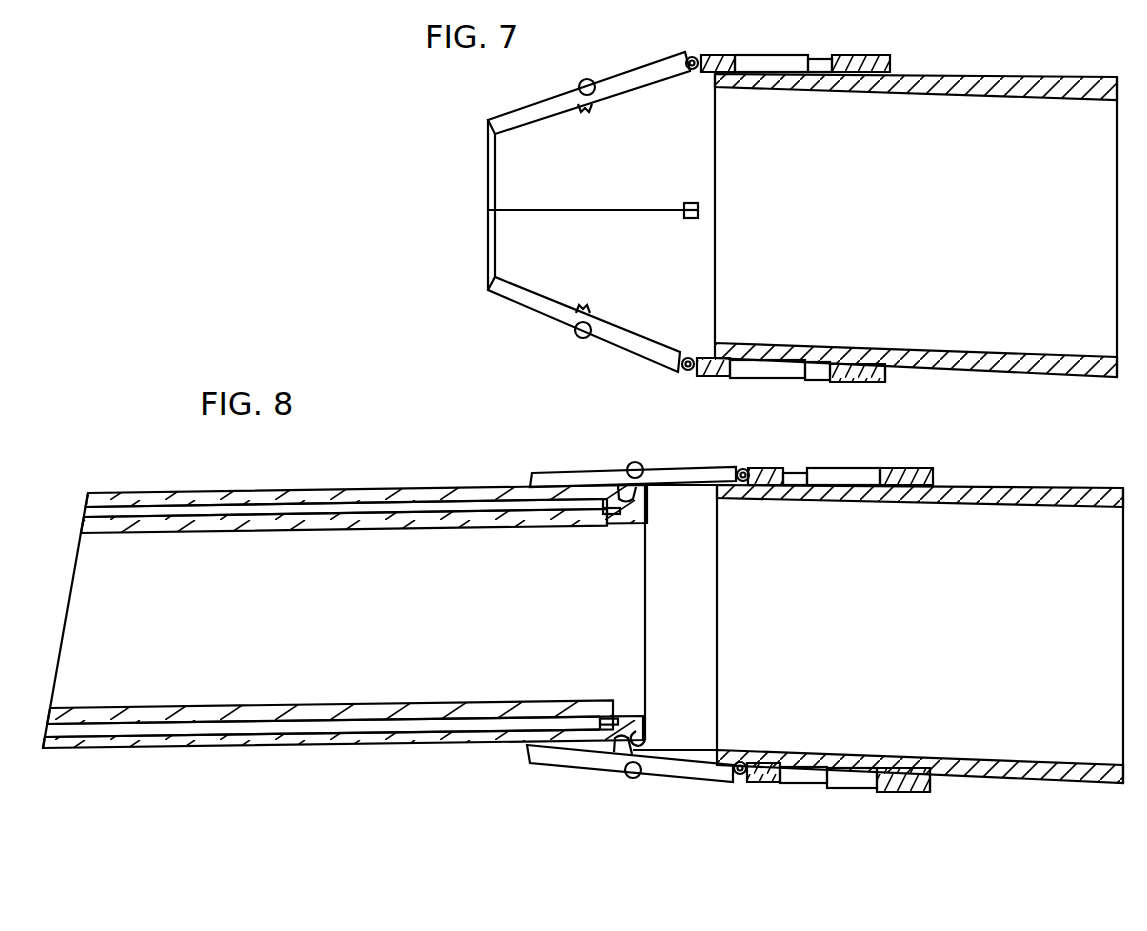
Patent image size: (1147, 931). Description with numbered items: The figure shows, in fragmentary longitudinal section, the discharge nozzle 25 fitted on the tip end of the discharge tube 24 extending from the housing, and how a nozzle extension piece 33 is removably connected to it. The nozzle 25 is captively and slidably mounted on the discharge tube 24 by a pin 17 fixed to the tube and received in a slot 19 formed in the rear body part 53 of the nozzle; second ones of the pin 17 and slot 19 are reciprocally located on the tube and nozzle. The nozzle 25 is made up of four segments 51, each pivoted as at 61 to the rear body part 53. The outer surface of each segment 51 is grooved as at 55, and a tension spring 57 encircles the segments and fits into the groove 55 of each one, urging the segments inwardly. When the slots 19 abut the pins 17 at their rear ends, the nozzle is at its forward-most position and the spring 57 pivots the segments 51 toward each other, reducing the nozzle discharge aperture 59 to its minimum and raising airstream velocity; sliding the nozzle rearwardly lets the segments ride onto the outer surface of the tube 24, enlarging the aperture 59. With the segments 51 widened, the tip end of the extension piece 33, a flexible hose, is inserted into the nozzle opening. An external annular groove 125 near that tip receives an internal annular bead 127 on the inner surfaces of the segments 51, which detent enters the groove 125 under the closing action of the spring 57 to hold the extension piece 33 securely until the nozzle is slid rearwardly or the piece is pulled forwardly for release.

In FIG. 7, the pin 17 is at (832, 58).
In FIG. 8, the pin 17 is at (815, 778).
In FIG. 7, the slot 19 is at (783, 57).
In FIG. 8, the slot 19 is at (850, 782).
In FIG. 7, the discharge tube 24 is at (1045, 175).
In FIG. 8, the discharge tube 24 is at (920, 634).
In FIG. 7, the discharge nozzle 25 is at (617, 349).
In FIG. 8, the discharge nozzle 25 is at (707, 783).
In FIG. 8, the nozzle extension piece 33 is at (276, 748).
In FIG. 7, the segment 51 is at (511, 117).
In FIG. 8, the segment 51 is at (663, 771).
In FIG. 7, the rear body part 53 is at (862, 382).
In FIG. 8, the rear body part 53 is at (912, 792).
In FIG. 7, the groove 55 is at (598, 316).
In FIG. 8, the groove 55 is at (628, 778).
In FIG. 7, the tension spring 57 is at (579, 339).
In FIG. 8, the tension spring 57 is at (645, 468).
In FIG. 7, the nozzle discharge aperture 59 is at (488, 182).
In FIG. 7, the pivot 61 is at (698, 56).
In FIG. 8, the external annular groove 125 is at (637, 736).
In FIG. 8, the internal annular bead 127 is at (615, 753).